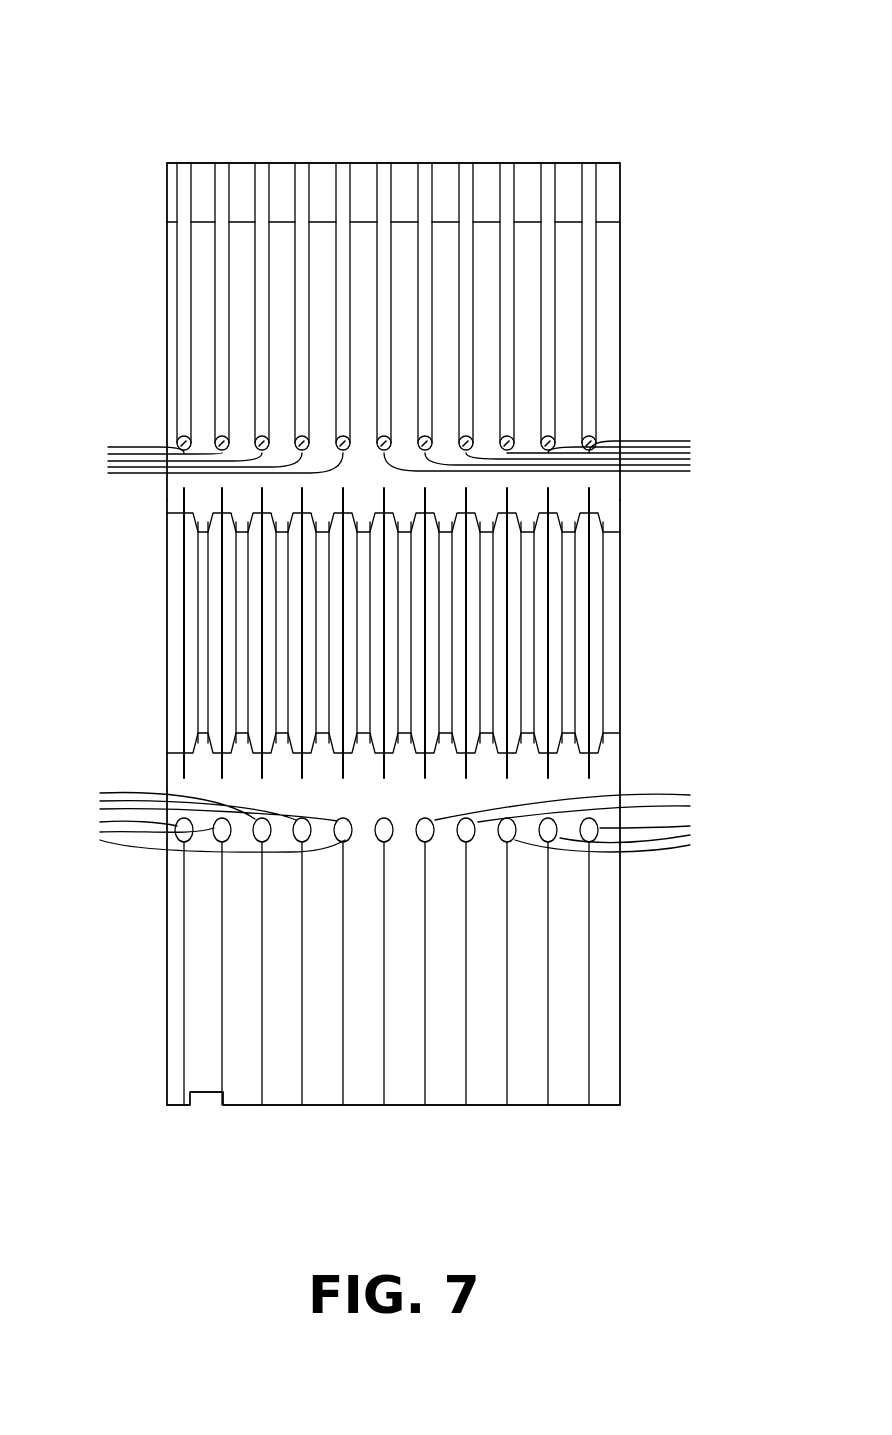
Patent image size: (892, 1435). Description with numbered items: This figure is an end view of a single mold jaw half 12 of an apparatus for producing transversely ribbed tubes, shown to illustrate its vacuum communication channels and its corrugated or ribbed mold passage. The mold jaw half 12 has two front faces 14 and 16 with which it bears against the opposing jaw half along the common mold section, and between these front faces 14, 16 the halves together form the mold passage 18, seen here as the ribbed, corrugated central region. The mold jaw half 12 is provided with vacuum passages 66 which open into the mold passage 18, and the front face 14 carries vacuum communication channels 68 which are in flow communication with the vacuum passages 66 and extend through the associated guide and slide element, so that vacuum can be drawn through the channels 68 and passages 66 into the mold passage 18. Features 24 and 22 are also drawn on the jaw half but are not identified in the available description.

The mold jaw half 12 is at (556, 138).
The top cover 24 is at (243, 161).
The vacuum communication channels 68 is at (507, 172).
The front face 14 is at (568, 295).
The vacuum passages 66 is at (397, 646).
The mold passage 18 is at (515, 612).
The front face 16 is at (490, 990).
The keying notch 22 is at (325, 1108).